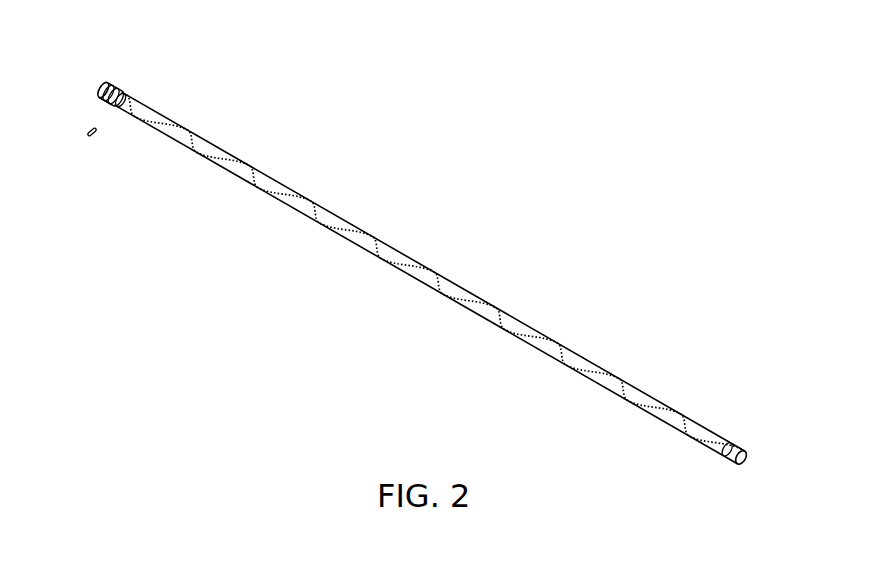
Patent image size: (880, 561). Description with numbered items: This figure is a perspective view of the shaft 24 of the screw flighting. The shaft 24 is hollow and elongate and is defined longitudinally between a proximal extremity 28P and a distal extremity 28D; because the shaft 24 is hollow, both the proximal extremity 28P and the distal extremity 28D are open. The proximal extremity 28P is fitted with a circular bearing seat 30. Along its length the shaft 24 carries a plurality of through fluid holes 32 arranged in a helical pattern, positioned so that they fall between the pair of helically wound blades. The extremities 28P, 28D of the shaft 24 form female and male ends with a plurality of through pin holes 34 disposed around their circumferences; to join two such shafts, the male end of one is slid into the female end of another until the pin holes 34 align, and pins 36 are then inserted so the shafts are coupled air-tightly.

The shaft 24 is at (596, 177).
The distal extremity 28D is at (107, 102).
The proximal extremity 28P is at (730, 466).
The circular bearing seat 30 is at (102, 90).
The fluid holes 32 is at (223, 162).
The pin holes 34 is at (124, 90).
The pins 36 is at (96, 136).